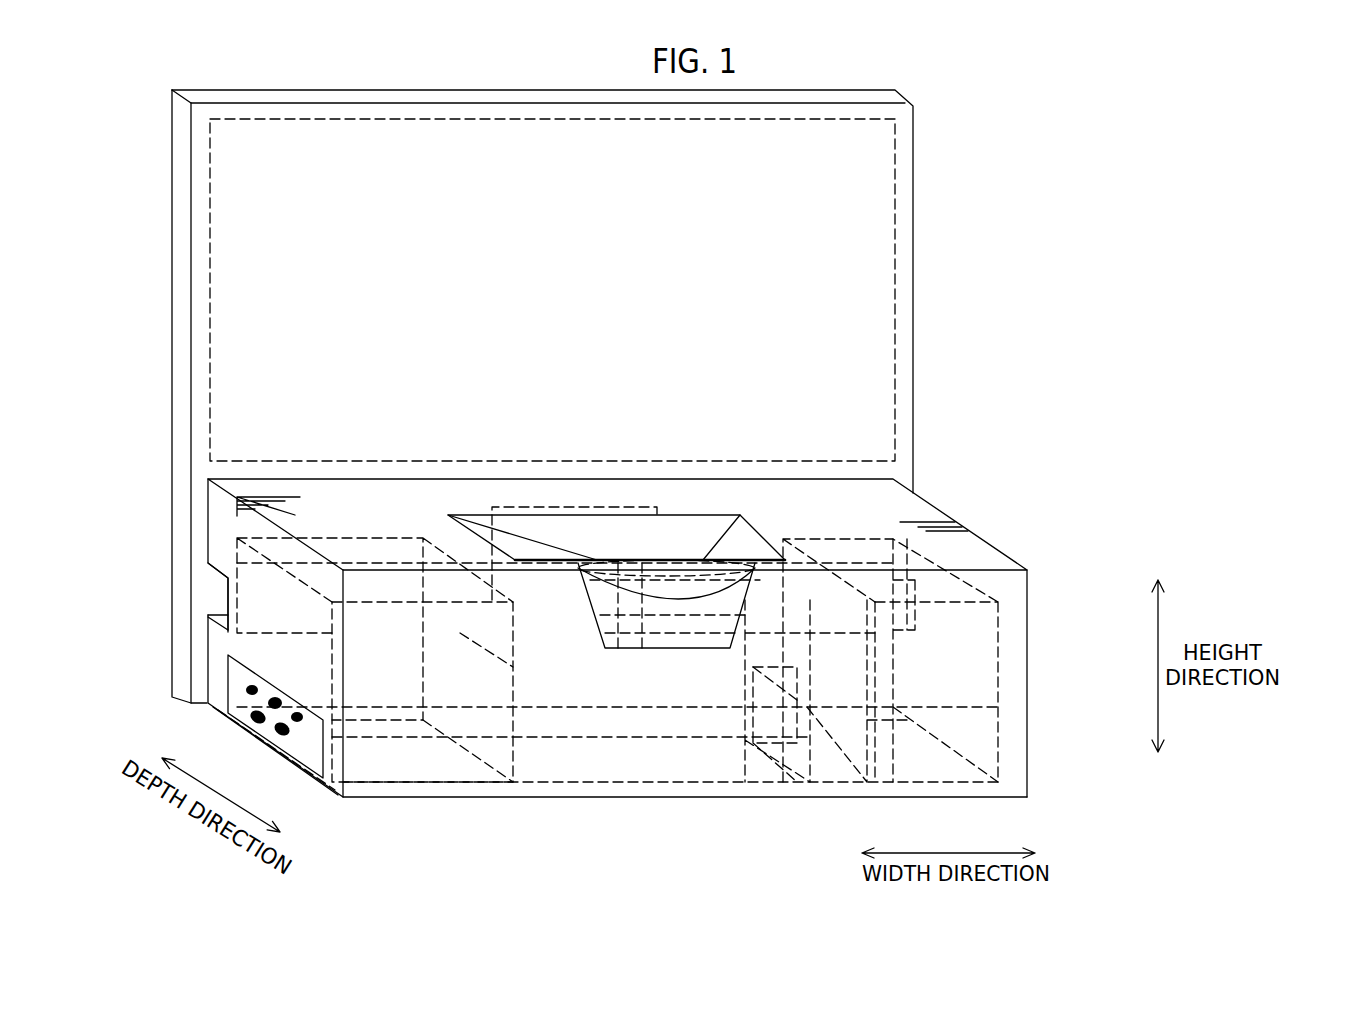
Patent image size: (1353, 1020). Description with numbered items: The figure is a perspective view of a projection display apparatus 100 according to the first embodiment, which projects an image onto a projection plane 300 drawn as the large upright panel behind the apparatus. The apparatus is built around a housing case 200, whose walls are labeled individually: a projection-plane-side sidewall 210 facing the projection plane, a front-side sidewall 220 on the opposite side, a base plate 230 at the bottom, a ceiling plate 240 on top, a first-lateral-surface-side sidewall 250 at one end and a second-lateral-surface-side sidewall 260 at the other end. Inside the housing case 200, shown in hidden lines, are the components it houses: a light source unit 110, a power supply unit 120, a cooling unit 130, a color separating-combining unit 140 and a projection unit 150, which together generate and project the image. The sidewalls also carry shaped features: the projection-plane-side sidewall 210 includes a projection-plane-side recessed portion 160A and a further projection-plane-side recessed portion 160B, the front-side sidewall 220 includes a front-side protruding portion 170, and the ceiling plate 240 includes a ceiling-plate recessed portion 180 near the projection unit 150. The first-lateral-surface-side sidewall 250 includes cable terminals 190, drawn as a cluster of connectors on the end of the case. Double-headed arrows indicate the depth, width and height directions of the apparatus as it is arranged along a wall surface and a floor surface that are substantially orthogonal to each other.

The projection display apparatus 100 is at (1010, 508).
The light source unit 110 is at (942, 782).
The power supply unit 120 is at (830, 782).
The cooling unit 130 is at (437, 783).
The color separating-combining unit 140 is at (640, 740).
The projection unit 150 is at (596, 505).
The projection-plane-side recessed portion 160A is at (230, 592).
The projection-plane-side recessed portion 160B is at (917, 610).
The front-side protruding portion 170 is at (680, 603).
The ceiling-plate recessed portion 180 is at (781, 523).
The cable terminals 190 is at (290, 755).
The housing case 200 is at (1013, 553).
The projection-plane-side sidewall 210 is at (421, 497).
The front-side sidewall 220 is at (732, 783).
The base plate 230 is at (553, 772).
The ceiling plate 240 is at (326, 492).
The first-lateral-surface-side sidewall 250 is at (228, 522).
The second-lateral-surface-side sidewall 260 is at (1013, 690).
The projection plane 300 is at (895, 299).